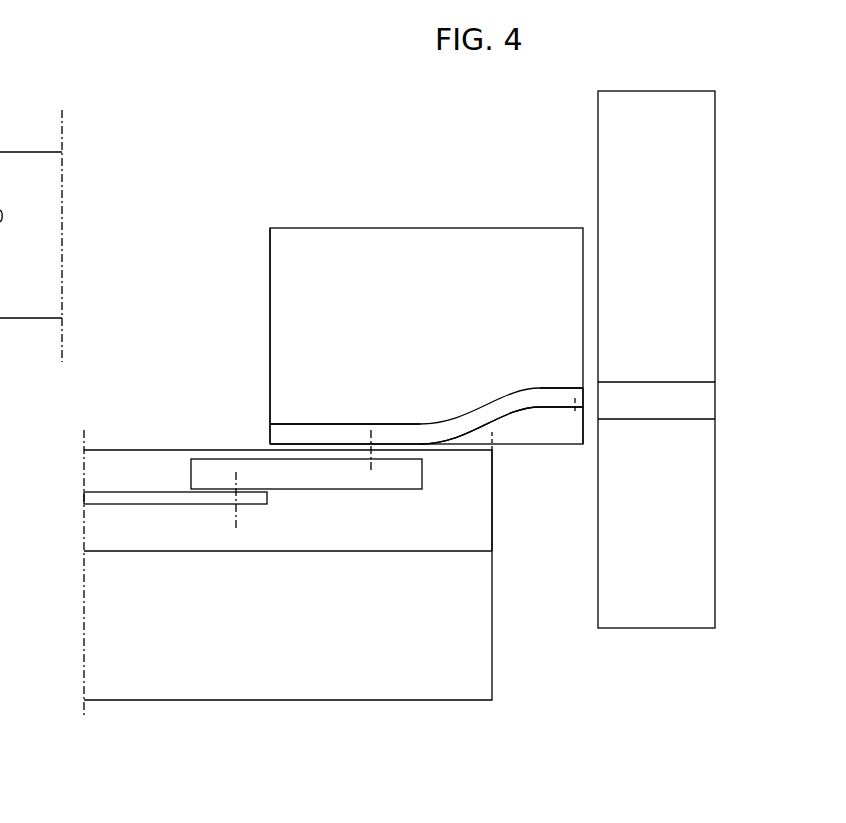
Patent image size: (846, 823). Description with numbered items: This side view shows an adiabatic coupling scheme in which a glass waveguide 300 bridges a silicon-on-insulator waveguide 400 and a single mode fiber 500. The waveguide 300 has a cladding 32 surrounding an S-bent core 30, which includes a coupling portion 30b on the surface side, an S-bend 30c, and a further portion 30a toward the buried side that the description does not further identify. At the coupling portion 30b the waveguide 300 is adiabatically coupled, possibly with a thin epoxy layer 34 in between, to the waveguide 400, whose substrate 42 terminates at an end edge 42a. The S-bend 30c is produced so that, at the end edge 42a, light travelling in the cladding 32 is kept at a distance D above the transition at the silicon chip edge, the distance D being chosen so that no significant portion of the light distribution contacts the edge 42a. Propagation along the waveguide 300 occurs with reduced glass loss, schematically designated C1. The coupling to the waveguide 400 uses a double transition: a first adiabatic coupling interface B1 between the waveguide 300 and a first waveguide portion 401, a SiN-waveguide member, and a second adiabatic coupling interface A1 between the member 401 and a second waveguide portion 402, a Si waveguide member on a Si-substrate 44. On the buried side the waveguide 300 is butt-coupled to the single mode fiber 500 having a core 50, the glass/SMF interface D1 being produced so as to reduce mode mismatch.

The waveguide 300 is at (328, 198).
The glass loss C1 is at (455, 292).
The cladding 32 is at (297, 283).
The S-bent core 30 is at (405, 412).
The end portion of strip 30a is at (580, 423).
The coupling portion 30b is at (305, 432).
The S-bend 30c is at (490, 425).
The epoxy layer 34 is at (0, 128).
The distance D is at (495, 441).
The glass/SMF interface D1 is at (588, 299).
The silicon photonics waveguide 400 is at (295, 582).
The substrate 42 is at (122, 462).
The end edge 42a is at (496, 531).
The Si-substrate 44 is at (482, 677).
The first waveguide portion 401 is at (302, 475).
The second waveguide portion 402 is at (103, 497).
The second adiabatic coupling interface A1 is at (237, 517).
The first adiabatic coupling interface B1 is at (378, 459).
The single mode fiber 500 is at (746, 212).
The core 50 is at (695, 402).